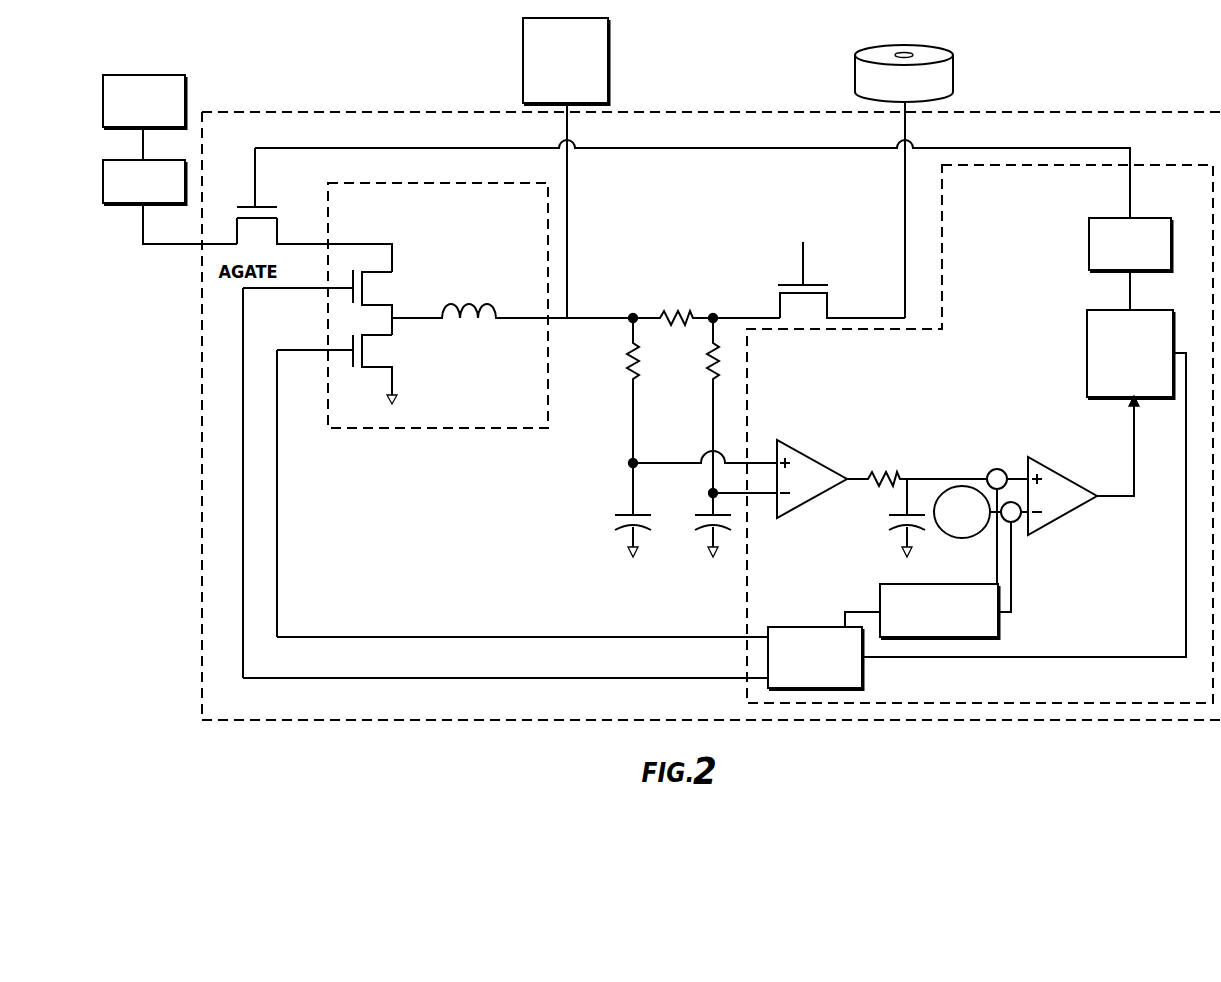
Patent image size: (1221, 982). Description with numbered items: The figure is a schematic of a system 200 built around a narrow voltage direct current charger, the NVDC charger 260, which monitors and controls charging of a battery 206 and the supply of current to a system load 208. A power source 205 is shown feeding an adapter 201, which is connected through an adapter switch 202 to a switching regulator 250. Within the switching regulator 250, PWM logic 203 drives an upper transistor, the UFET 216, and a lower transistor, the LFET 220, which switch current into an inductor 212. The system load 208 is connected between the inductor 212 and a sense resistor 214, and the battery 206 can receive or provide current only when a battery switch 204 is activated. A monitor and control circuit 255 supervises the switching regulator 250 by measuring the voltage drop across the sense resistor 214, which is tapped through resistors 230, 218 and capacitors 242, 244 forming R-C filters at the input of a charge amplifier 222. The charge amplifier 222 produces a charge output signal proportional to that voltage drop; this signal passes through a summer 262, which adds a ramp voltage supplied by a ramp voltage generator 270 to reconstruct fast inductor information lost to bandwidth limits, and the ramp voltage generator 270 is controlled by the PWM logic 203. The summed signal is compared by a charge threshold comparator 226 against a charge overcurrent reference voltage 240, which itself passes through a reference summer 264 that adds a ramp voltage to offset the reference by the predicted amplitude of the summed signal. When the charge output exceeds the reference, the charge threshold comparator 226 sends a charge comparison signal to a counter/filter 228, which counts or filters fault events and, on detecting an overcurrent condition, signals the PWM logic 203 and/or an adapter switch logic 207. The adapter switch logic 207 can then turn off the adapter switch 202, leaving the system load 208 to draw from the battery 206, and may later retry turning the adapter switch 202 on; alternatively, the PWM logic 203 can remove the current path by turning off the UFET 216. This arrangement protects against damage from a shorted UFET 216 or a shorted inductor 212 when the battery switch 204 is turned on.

The system 200 is at (1132, 113).
The adapter 201 is at (103, 181).
The adapter switch 202 is at (257, 205).
The PWM logic 203 is at (826, 627).
The battery switch 204 is at (800, 277).
The power source 205 is at (103, 109).
The battery 206 is at (954, 81).
The adapter switch logic 207 is at (1172, 233).
The system load 208 is at (523, 58).
The inductor 212 is at (478, 306).
The sense resistor 214 is at (660, 315).
The UFET 216 is at (348, 298).
The resistor 218 is at (707, 355).
The LFET 220 is at (348, 362).
The charge amplifier 222 is at (823, 462).
The charge threshold comparator 226 is at (1027, 469).
The counter/filter 228 is at (1174, 339).
The resistor 230 is at (640, 364).
The charge overcurrent reference voltage 240 is at (968, 540).
The capacitor 242 is at (614, 527).
The capacitor 244 is at (694, 527).
The switching regulator 250 is at (423, 234).
The monitor and control circuit 255 is at (1023, 235).
The NVDC charger 260 is at (763, 138).
The summer 262 is at (988, 473).
The reference summer 264 is at (1016, 524).
The ramp voltage generator 270 is at (880, 590).